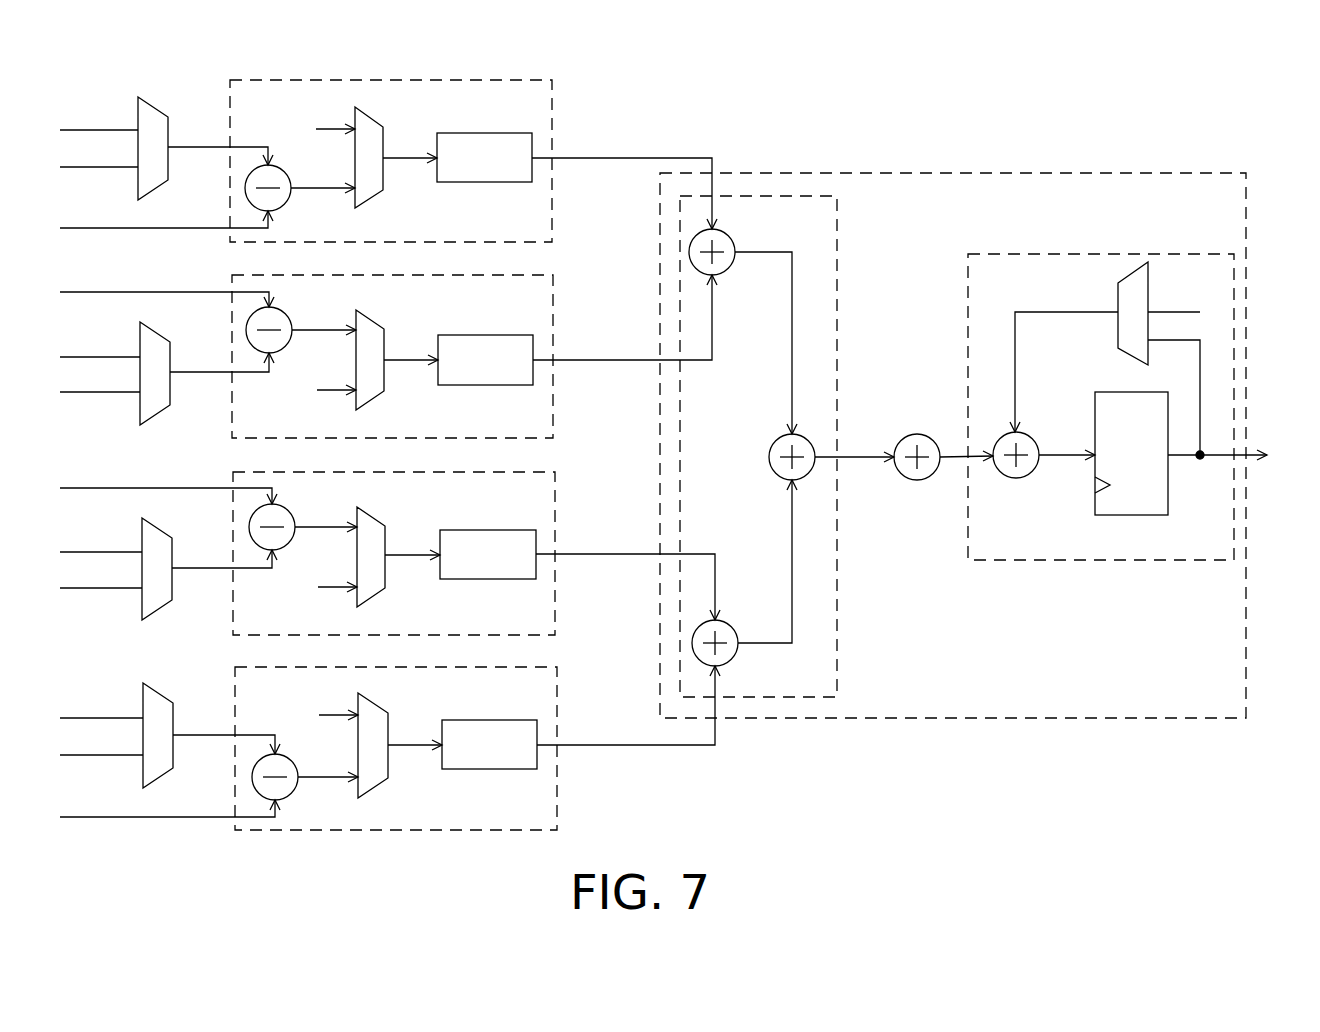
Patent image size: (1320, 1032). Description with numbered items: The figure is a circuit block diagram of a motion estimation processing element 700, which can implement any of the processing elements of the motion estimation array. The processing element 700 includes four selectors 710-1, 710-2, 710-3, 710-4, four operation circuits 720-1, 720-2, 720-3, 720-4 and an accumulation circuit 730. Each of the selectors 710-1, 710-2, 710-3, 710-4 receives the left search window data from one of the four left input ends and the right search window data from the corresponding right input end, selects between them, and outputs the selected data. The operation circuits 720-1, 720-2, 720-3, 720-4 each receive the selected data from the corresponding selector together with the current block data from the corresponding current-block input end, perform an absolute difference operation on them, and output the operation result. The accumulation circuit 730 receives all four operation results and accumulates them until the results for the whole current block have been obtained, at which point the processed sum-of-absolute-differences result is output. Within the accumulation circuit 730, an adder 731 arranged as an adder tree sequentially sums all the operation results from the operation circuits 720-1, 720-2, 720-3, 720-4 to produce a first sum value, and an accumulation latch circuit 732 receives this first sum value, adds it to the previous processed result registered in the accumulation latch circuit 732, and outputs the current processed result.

The processing element 700 is at (672, 453).
The selector 710-1 is at (158, 185).
The selector 710-2 is at (160, 334).
The selector 710-3 is at (162, 531).
The selector 710-4 is at (163, 773).
The operation circuit 720-1 is at (552, 97).
The operation circuit 720-2 is at (553, 412).
The operation circuit 720-3 is at (555, 610).
The operation circuit 720-4 is at (557, 684).
The accumulation circuit 730 is at (982, 408).
The adder 731 is at (837, 385).
The accumulation latch circuit 732 is at (968, 328).